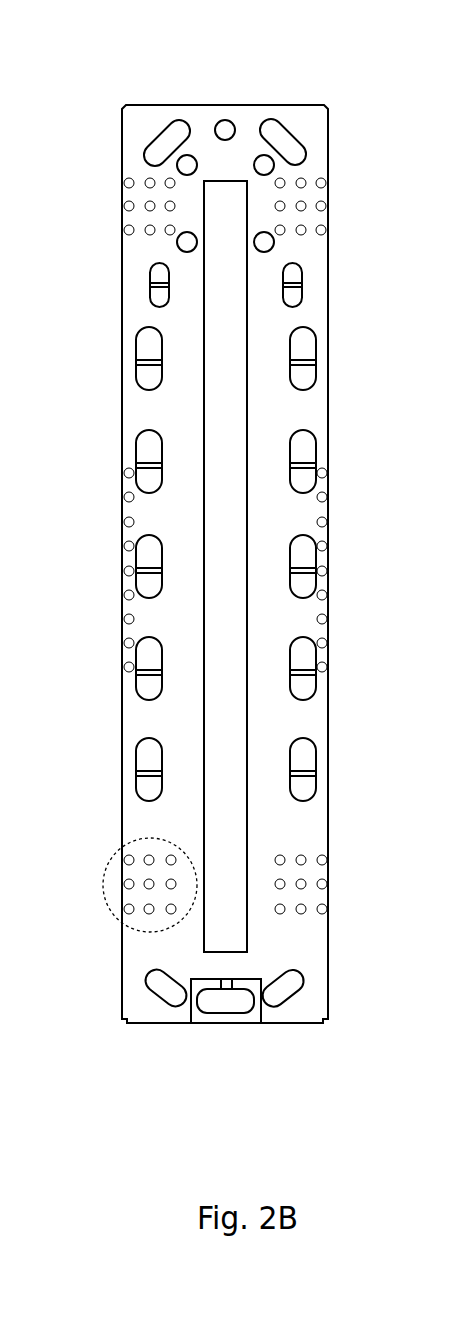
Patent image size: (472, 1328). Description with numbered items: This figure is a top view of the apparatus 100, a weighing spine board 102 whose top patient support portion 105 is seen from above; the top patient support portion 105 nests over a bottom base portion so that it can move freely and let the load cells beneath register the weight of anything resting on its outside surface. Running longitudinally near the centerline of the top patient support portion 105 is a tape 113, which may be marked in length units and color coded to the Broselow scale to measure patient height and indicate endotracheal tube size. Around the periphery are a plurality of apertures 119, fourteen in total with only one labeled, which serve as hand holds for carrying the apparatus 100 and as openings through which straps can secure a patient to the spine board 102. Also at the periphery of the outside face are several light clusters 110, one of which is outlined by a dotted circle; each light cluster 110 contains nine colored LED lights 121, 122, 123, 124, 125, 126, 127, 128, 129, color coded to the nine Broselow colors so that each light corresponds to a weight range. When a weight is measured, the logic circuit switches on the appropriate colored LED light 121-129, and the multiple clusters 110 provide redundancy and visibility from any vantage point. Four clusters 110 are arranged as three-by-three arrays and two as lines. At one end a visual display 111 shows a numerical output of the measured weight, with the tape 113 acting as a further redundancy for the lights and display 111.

The apparatus 100 is at (292, 50).
The spine board 102 is at (328, 279).
The top patient support portion 105 is at (313, 408).
The light cluster 110 is at (117, 852).
The visual display 111 is at (225, 1007).
The tape 113 is at (222, 403).
The aperture 119 is at (145, 753).
The colored LED light 121 is at (129, 860).
The colored LED light 122 is at (149, 860).
The colored LED light 123 is at (171, 860).
The colored LED light 124 is at (129, 884).
The colored LED light 125 is at (149, 884).
The colored LED light 126 is at (171, 884).
The colored LED light 127 is at (129, 909).
The colored LED light 128 is at (149, 909).
The colored LED light 129 is at (171, 909).